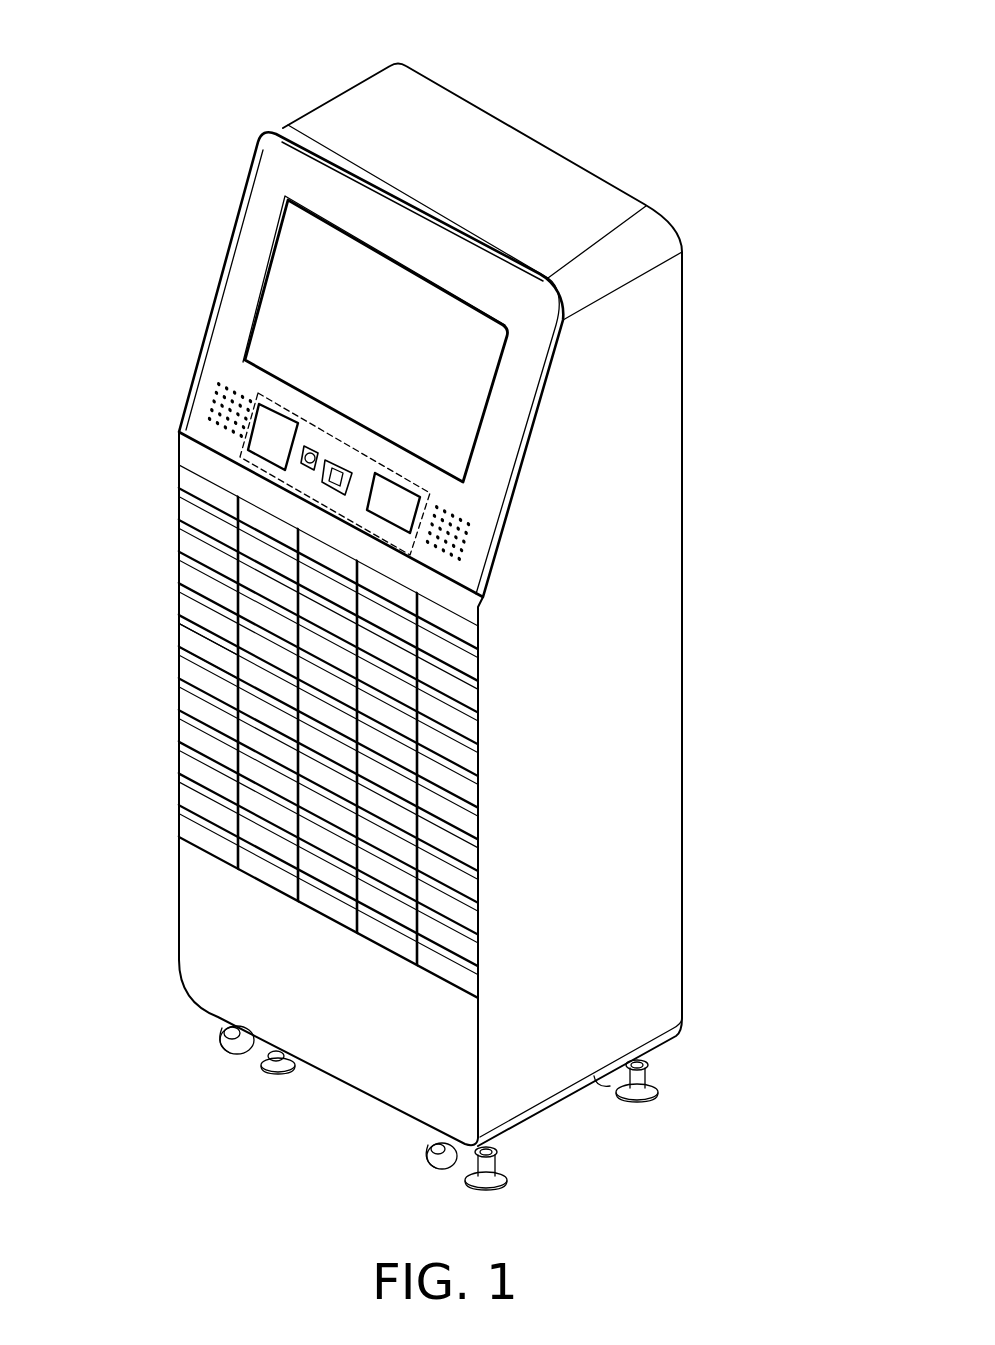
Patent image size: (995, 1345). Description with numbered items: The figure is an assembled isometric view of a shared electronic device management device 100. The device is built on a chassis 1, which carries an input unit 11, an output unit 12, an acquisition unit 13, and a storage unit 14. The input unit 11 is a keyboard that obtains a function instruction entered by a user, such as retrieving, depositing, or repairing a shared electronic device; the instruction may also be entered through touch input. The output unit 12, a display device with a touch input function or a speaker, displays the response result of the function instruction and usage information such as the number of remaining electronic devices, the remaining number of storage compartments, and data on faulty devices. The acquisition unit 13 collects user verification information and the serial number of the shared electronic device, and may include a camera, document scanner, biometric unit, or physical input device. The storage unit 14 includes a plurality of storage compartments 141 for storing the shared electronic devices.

The shared electronic device management device 100 is at (585, 50).
The chassis 1 is at (657, 347).
The input unit 11 is at (224, 398).
The output unit 12 is at (472, 383).
The acquisition unit 13 is at (302, 478).
The storage unit 14 is at (178, 602).
The storage compartment 141 is at (202, 643).